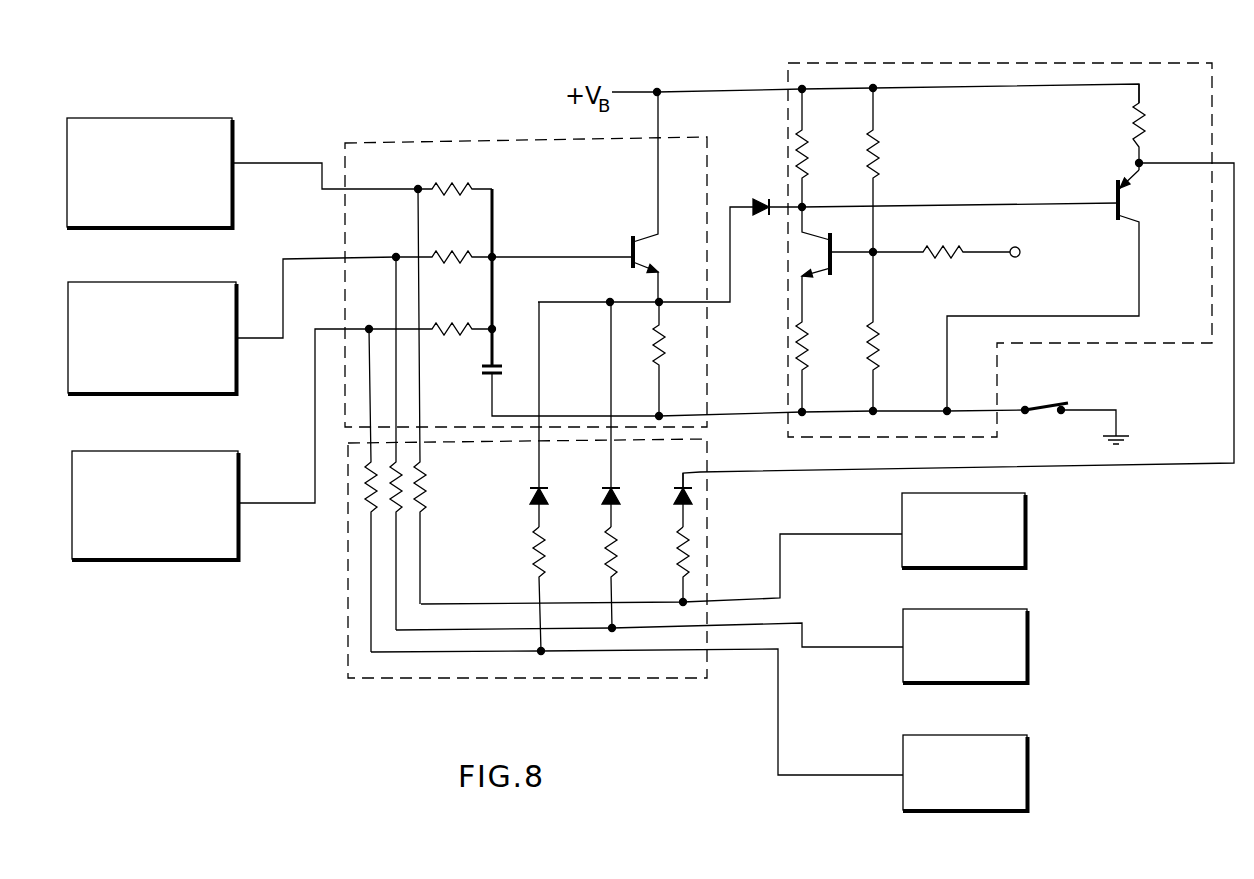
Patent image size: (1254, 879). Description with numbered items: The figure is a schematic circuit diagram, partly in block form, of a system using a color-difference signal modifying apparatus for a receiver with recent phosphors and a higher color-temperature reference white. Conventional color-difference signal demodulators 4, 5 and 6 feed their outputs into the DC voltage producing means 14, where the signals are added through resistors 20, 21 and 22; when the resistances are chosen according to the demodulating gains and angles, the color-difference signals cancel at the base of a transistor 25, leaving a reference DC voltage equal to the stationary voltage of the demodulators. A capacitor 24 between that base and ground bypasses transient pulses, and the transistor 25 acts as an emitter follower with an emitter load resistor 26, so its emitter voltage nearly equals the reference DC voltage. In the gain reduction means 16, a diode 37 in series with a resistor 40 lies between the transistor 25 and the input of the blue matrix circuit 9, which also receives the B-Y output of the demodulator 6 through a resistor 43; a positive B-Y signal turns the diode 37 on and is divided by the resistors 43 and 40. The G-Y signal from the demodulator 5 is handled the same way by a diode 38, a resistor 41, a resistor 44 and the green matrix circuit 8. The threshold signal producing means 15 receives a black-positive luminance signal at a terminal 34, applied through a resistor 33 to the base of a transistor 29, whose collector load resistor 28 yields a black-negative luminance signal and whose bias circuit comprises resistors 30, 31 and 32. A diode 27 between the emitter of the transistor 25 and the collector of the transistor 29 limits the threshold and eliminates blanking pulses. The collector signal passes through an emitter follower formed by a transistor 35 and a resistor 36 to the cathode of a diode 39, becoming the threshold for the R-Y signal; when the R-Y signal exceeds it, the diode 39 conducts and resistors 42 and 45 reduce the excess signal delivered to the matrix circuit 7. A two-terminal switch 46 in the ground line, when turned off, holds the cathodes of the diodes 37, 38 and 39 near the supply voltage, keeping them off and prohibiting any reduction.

The color-difference signal demodulator 4 is at (236, 134).
The G-Y demodulator 5 is at (238, 296).
The B-Y demodulator 6 is at (240, 465).
The matrix circuit 7 is at (1028, 553).
The green matrix circuit 8 is at (1028, 632).
The blue matrix circuit 9 is at (1028, 748).
The DC voltage producing means 14 is at (430, 140).
The threshold signal producing means 15 is at (1062, 62).
The gain reduction means 16 is at (451, 678).
The resistor 20 is at (468, 183).
The resistor 21 is at (456, 250).
The resistor 22 is at (456, 321).
The capacitor 24 is at (482, 369).
The transistor 25 is at (630, 240).
The emitter load resistor 26 is at (666, 354).
The diode 27 is at (744, 196).
The collector load resistor 28 is at (812, 147).
The transistor 29 is at (835, 243).
The resistor 30 is at (814, 344).
The resistor 31 is at (886, 147).
The resistor 32 is at (886, 344).
The resistor 33 is at (950, 250).
The terminal 34 is at (1020, 248).
The transistor 35 is at (1109, 180).
The resistor 36 is at (1148, 120).
The diode 37 is at (546, 483).
The diode 38 is at (623, 483).
The diode 39 is at (700, 495).
The resistor 40 is at (548, 547).
The resistor 41 is at (621, 547).
The resistor 42 is at (705, 556).
The resistor 43 is at (358, 499).
The resistor 44 is at (386, 502).
The resistor 45 is at (432, 502).
The switch 46 is at (1056, 403).